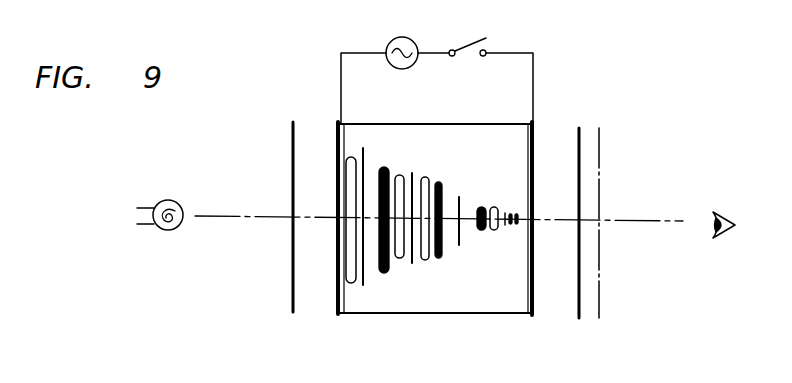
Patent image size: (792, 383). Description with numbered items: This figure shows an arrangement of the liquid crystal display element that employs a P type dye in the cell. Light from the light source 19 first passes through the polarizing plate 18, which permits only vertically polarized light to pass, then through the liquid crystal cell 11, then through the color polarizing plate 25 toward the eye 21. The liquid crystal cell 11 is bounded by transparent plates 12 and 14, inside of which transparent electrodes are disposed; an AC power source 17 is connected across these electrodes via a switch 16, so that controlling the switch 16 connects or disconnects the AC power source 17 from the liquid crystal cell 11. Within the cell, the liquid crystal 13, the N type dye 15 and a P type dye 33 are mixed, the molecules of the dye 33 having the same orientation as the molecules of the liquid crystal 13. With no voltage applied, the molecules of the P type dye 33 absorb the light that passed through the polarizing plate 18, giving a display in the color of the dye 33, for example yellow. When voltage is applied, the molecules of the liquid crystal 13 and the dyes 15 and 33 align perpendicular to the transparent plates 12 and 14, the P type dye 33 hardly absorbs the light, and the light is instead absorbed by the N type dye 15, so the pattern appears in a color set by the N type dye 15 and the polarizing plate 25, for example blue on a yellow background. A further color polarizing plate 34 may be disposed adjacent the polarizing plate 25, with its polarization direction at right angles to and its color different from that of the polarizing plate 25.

The liquid crystal cell 11 is at (495, 314).
The transparent plate 12 is at (334, 302).
The liquid crystal 13 is at (363, 285).
The transparent plate 14 is at (534, 297).
The N type dye 15 is at (384, 274).
The switch 16 is at (470, 44).
The AC power source 17 is at (388, 43).
The polarizing plate 18 is at (294, 123).
The light source 19 is at (166, 200).
The eye 21 is at (713, 212).
The color polarizing plate 25 is at (579, 131).
The P type dye 33 is at (348, 285).
The color polarizing plate 34 is at (599, 290).